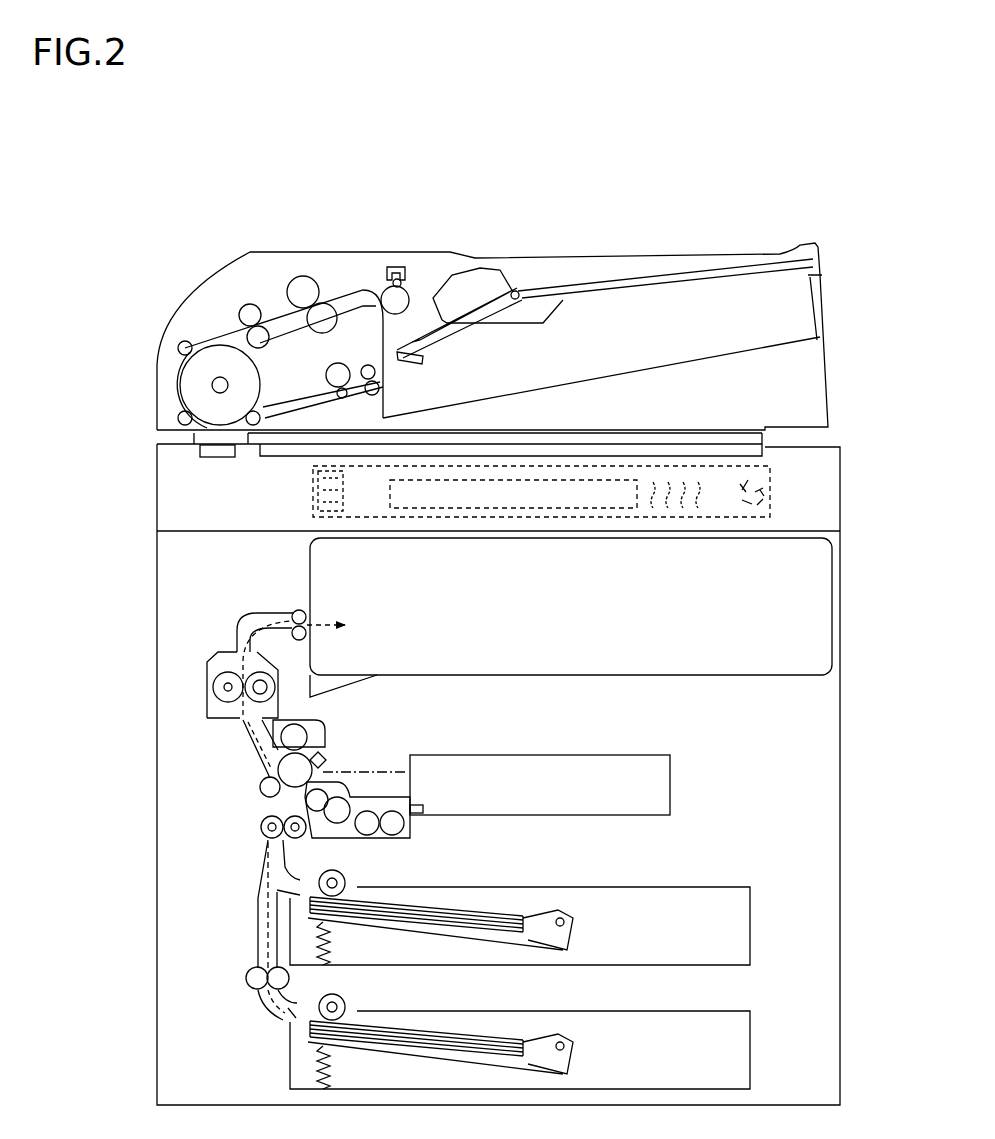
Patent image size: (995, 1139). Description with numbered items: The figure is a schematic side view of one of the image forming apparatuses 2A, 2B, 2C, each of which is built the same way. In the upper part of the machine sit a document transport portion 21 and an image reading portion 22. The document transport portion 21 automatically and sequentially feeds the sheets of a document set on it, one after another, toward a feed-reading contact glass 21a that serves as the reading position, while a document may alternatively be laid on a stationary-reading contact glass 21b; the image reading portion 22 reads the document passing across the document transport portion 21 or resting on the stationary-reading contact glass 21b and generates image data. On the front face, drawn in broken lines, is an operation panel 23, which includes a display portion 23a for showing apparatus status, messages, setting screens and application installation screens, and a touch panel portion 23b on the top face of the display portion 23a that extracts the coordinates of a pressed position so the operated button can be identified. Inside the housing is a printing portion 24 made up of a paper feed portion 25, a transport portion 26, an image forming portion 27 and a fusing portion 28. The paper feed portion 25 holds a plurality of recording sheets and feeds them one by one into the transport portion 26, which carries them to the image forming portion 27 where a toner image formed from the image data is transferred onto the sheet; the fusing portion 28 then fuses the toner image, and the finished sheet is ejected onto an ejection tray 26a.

The image forming apparatus 2A is at (459, 625).
The image forming apparatus 2B is at (459, 625).
The image forming apparatus 2C is at (148, 282).
The document transport portion 21 is at (421, 265).
The feed-reading contact glass 21a is at (200, 450).
The stationary-reading contact glass 21b is at (575, 460).
The image reading portion 22 is at (843, 445).
The operation panel 23 is at (305, 497).
The display portion 23a is at (513, 494).
The touch panel portion 23b is at (486, 498).
The printing portion 24 is at (92, 538).
The paper feed portion 25 is at (757, 1048).
The transport portion 26 is at (255, 912).
The ejection tray 26a is at (560, 672).
The image forming portion 27 is at (412, 745).
The fusing portion 28 is at (207, 718).